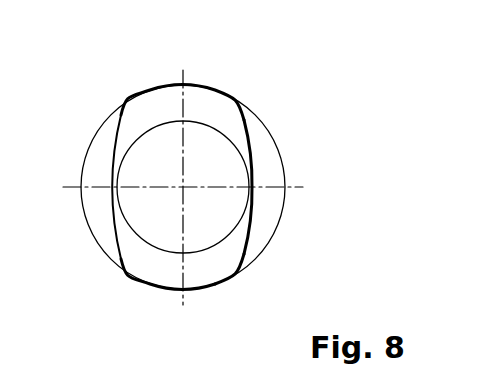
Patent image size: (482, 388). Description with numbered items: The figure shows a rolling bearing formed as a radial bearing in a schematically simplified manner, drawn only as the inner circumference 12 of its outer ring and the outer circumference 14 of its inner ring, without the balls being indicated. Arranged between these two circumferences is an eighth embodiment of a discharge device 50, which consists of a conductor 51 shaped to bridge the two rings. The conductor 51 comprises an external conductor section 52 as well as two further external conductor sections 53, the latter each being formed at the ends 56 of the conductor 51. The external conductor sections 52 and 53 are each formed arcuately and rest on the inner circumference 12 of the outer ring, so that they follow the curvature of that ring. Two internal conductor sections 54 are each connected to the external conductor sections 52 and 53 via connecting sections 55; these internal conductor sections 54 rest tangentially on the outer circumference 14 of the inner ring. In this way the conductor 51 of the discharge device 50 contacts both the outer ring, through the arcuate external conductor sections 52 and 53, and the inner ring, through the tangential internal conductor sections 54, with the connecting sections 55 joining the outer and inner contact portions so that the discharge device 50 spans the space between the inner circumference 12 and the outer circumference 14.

The inner circumference 12 is at (90, 164).
The outer circumference 14 is at (147, 248).
The discharge device 50 is at (118, 72).
The conductor 51 is at (249, 133).
The external conductor section 52 is at (204, 88).
The further external conductor sections 53 is at (215, 288).
The internal conductor sections 54 is at (255, 178).
The connecting sections 55 is at (251, 141).
The ends 56 is at (236, 286).